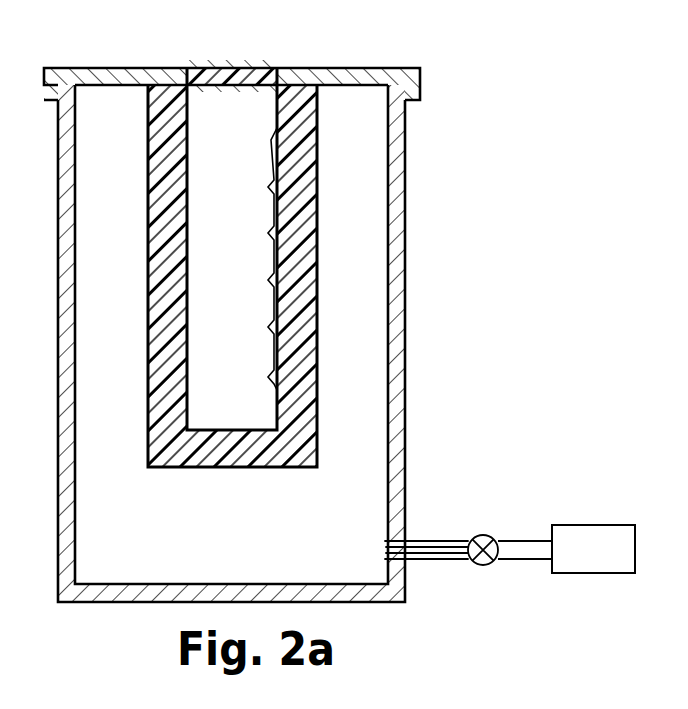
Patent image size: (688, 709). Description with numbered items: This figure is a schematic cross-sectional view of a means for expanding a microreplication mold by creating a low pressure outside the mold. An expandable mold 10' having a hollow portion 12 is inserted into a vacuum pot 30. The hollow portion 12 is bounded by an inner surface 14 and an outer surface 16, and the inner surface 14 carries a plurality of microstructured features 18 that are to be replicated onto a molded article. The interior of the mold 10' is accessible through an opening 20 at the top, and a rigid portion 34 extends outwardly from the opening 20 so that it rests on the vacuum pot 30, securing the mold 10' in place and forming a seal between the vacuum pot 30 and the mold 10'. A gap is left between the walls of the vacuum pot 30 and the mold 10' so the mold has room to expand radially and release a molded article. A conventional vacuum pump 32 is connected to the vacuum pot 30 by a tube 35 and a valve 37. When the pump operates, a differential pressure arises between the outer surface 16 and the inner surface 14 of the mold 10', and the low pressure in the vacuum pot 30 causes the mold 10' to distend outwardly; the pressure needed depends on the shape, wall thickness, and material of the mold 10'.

The expandable mold 10' is at (339, 319).
The hollow portion 12 is at (148, 243).
The inner surface 14 is at (188, 97).
The outer surface 16 is at (162, 127).
The microstructured features 18 is at (266, 134).
The opening 20 is at (243, 107).
The vacuum pot 30 is at (398, 331).
The vacuum pump 32 is at (587, 537).
The rigid portion 34 is at (412, 78).
The tube 35 is at (433, 540).
The valve 37 is at (483, 564).